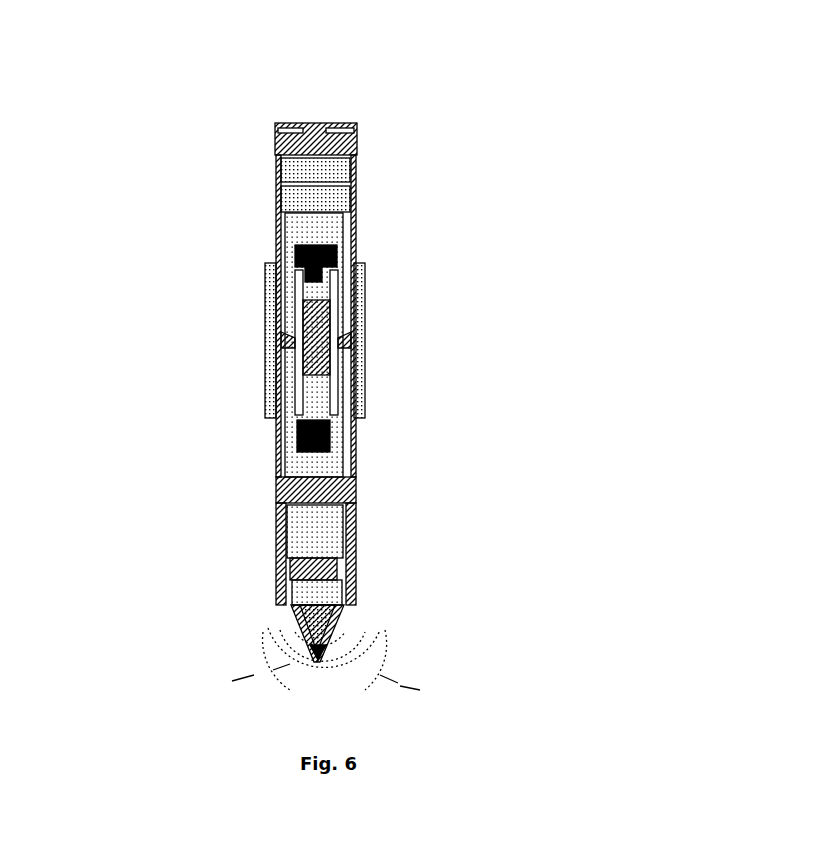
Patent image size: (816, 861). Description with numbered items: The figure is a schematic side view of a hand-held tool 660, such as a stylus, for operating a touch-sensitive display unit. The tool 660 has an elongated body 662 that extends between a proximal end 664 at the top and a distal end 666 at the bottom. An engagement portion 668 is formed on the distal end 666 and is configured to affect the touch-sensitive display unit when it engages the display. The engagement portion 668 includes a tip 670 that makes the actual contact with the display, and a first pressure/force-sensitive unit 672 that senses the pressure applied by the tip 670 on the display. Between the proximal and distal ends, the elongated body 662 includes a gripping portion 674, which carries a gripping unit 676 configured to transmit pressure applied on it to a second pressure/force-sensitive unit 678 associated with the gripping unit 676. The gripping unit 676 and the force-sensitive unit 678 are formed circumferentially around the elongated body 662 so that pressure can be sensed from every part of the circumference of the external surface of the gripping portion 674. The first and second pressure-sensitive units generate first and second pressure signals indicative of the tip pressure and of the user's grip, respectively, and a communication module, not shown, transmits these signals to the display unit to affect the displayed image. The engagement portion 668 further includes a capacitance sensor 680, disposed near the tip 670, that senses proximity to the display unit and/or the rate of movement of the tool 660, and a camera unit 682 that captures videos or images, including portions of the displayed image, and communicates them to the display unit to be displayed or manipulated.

The tool 660 is at (167, 138).
The elongated body 662 is at (357, 259).
The proximal end 664 is at (362, 135).
The distal end 666 is at (262, 610).
The engagement portion 668 is at (365, 542).
The tip 670 is at (322, 658).
The first pressure/force-sensitive unit 672 is at (300, 495).
The gripping portion 674 is at (398, 325).
The gripping unit 676 is at (272, 330).
The second pressure/force-sensitive unit 678 is at (340, 347).
The capacitance sensor 680 is at (315, 612).
The camera unit 682 is at (317, 645).